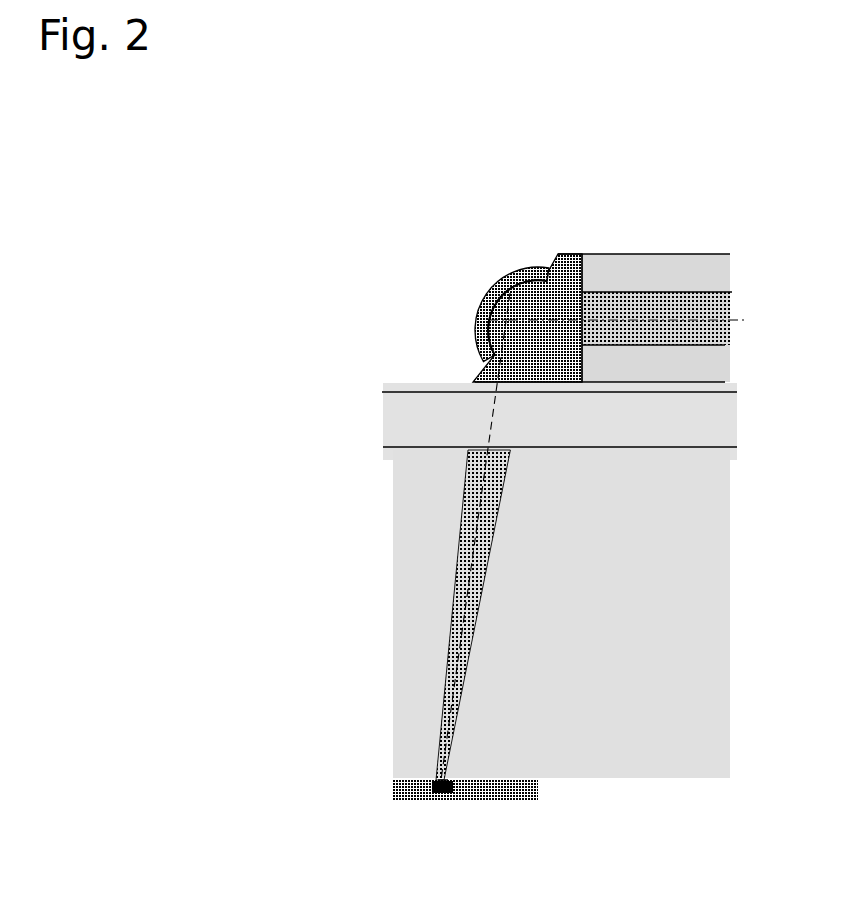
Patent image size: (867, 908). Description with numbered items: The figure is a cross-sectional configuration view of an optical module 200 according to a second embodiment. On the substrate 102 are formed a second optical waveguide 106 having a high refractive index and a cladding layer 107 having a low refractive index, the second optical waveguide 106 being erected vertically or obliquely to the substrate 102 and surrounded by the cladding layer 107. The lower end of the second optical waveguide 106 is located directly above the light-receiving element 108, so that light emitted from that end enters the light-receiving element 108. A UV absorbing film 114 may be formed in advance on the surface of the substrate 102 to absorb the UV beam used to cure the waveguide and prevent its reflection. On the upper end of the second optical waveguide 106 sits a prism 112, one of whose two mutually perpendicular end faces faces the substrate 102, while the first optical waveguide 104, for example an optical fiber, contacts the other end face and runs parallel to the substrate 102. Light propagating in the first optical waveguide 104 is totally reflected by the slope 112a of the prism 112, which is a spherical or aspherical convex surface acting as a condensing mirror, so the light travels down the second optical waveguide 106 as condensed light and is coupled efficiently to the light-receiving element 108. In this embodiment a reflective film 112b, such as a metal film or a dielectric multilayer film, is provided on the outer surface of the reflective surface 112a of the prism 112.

The optical module 200 is at (282, 196).
The substrate 102 is at (520, 797).
The first optical waveguide 104 is at (652, 254).
The second optical waveguide 106 is at (498, 510).
The cladding layer 107 is at (716, 597).
The light-receiving element 108 is at (442, 795).
The prism 112 is at (570, 273).
The slope 112a is at (522, 283).
The reflective film 112b is at (477, 330).
The UV absorbing film 114 is at (465, 773).